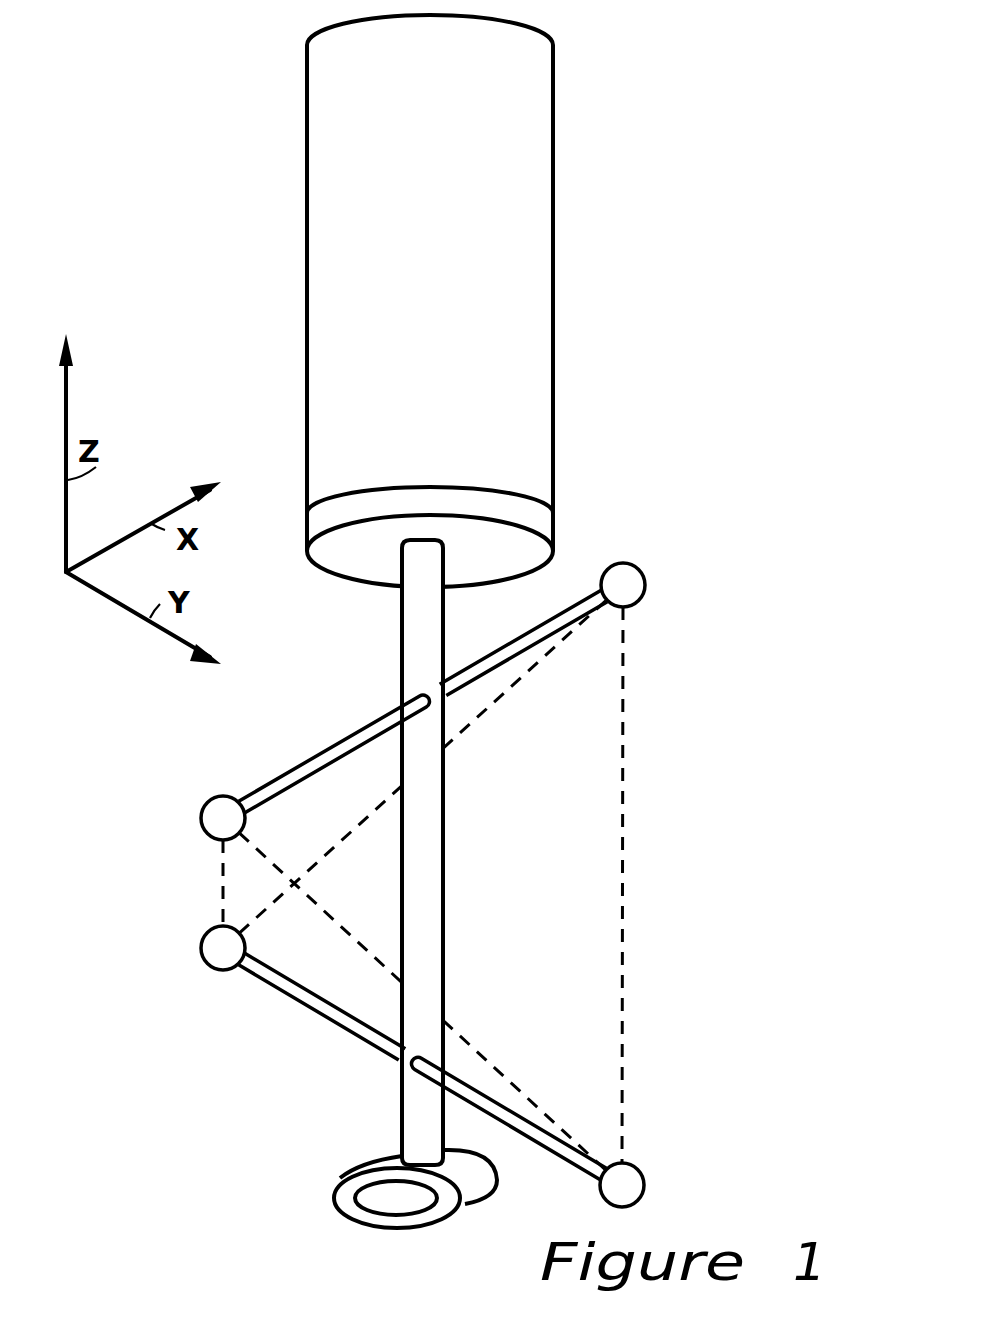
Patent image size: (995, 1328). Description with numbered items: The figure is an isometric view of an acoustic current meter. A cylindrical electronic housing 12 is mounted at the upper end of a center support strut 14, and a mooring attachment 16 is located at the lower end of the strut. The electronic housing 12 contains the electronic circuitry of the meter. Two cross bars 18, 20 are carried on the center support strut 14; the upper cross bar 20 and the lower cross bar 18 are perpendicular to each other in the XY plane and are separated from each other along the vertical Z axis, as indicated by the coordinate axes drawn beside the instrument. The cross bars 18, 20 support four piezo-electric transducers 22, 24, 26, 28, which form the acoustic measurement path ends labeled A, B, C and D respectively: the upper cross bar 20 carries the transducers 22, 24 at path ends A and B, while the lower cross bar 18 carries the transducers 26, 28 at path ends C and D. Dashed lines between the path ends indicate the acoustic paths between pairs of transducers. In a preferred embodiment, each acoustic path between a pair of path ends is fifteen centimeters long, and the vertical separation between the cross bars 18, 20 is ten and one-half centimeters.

The electronic housing 12 is at (553, 493).
The center support strut 14 is at (402, 663).
The mooring attachment 16 is at (333, 1200).
The cross bar 18 is at (330, 1021).
The cross bar 20 is at (318, 756).
The piezo-electric transducer 22 is at (639, 570).
The piezo-electric transducer 24 is at (201, 818).
The piezo-electric transducer 26 is at (201, 949).
The piezo-electric transducer 28 is at (683, 1187).